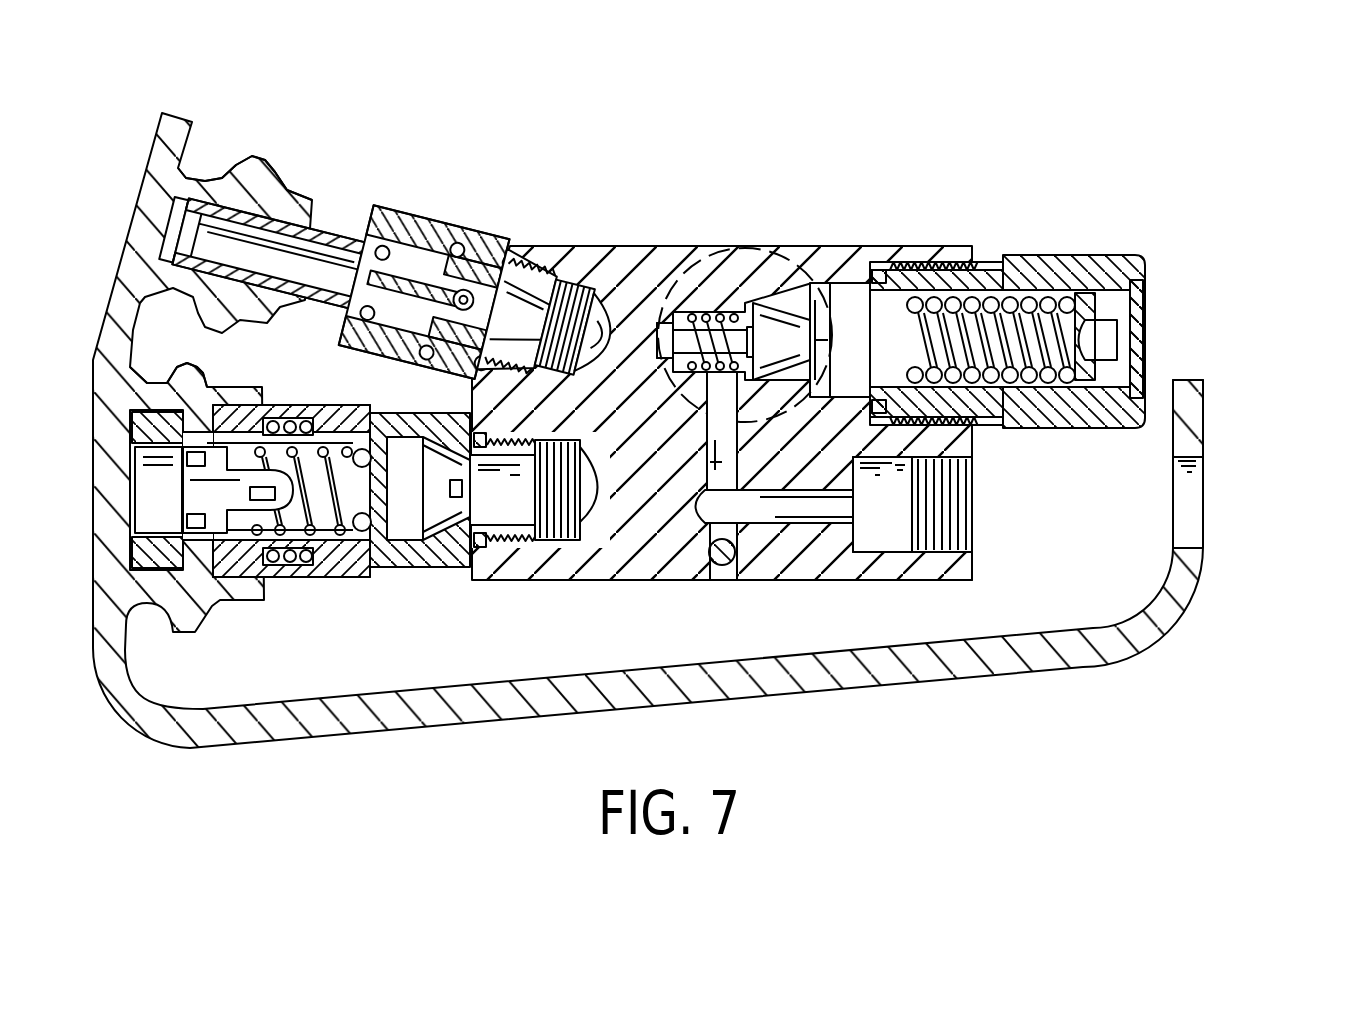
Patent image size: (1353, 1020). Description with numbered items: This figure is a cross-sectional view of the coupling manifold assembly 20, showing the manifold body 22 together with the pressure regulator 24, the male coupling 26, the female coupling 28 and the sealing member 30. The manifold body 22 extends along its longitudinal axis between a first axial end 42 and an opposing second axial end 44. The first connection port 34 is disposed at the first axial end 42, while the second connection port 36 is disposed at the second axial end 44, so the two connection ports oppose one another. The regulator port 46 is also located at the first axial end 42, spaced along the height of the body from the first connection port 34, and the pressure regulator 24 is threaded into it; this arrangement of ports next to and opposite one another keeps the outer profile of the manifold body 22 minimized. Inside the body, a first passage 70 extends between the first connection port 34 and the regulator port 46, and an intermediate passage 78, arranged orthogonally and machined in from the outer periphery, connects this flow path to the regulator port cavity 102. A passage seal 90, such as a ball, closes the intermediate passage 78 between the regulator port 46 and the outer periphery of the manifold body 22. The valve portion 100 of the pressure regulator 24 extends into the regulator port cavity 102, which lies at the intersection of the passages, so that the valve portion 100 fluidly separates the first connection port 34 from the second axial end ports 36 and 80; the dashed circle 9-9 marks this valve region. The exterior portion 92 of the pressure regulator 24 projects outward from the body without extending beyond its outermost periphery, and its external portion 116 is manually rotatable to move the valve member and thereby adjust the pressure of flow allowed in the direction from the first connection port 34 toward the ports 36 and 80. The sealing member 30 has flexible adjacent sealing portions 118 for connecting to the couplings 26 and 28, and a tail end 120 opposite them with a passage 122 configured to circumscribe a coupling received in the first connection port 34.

The coupling manifold assembly 20 is at (690, 350).
The manifold body 22 is at (843, 246).
The pressure regulator 24 is at (1164, 260).
The male coupling 26 is at (400, 238).
The female coupling 28 is at (337, 578).
The sealing member 30 is at (1204, 412).
The first connection port 34 is at (973, 507).
The second connection port 36 is at (572, 538).
The first axial end 42 is at (980, 569).
The second axial end 44 is at (464, 578).
The regulator port 46 is at (940, 262).
The first passage 70 is at (793, 512).
The intermediate passage 78 is at (710, 462).
The second axial end port 80 is at (603, 292).
The passage seal 90 is at (720, 565).
The exterior portion 92 is at (1024, 280).
The valve portion 100 is at (754, 241).
The regulator port cavity 102 is at (661, 322).
The external portion 116 is at (1103, 258).
The sealing portions 118 is at (261, 153).
The tail end 120 is at (1217, 570).
The passage 122 is at (1190, 545).
The section line 9-9 is at (792, 250).